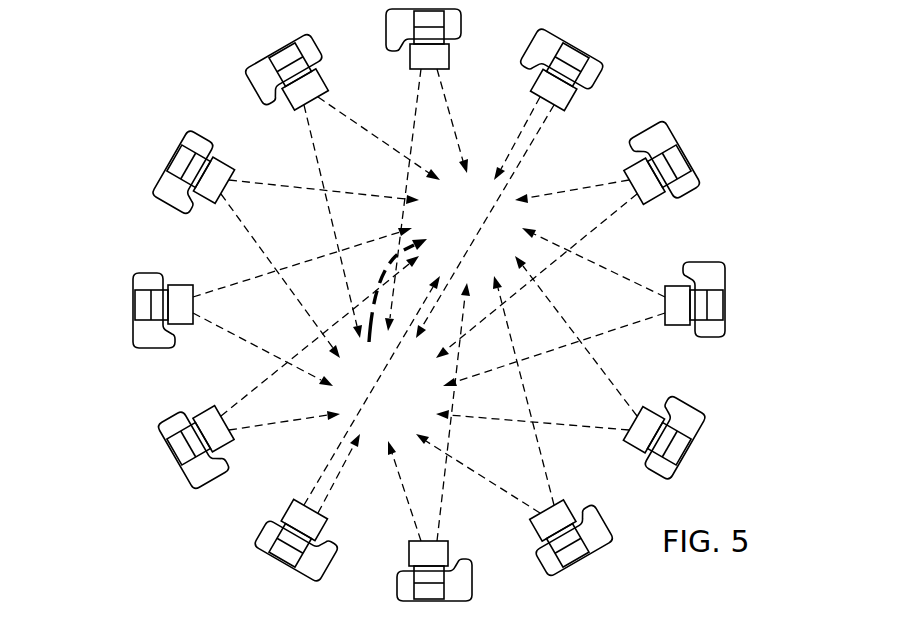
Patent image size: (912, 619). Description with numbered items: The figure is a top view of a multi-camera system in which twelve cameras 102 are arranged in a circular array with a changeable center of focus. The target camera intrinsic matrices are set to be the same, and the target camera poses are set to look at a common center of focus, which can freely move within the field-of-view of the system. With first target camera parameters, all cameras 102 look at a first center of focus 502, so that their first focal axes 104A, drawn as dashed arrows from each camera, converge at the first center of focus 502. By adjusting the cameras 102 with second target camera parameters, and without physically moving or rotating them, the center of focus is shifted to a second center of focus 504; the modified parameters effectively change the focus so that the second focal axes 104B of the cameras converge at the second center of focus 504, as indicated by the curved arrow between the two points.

The camera 102 is at (277, 50).
The first focal axes 104A is at (240, 222).
The second focal axes 104B is at (350, 124).
The first center of focus 502 is at (389, 398).
The second center of focus 504 is at (467, 214).